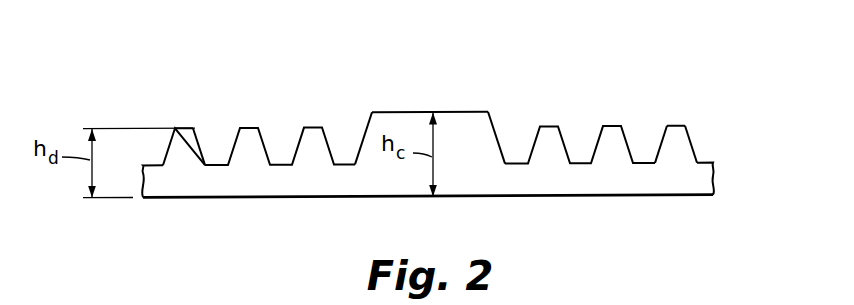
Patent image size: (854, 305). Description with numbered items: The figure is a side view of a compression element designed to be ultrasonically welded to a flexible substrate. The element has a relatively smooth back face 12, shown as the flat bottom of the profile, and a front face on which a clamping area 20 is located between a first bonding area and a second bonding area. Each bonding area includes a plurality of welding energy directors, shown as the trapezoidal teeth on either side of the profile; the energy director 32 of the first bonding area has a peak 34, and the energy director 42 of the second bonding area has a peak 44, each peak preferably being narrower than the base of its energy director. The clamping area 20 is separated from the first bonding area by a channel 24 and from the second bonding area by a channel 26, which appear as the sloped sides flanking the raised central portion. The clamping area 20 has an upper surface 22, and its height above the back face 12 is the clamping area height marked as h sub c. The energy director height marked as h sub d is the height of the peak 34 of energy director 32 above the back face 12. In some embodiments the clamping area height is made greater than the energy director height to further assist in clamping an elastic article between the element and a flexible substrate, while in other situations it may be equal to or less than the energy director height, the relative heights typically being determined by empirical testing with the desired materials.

The back face 12 is at (280, 196).
The clamping area 20 is at (428, 145).
The upper surface 22 is at (461, 112).
The channel 24 is at (343, 122).
The channel 26 is at (531, 109).
The welding energy director 32 is at (160, 107).
The peak 34 is at (186, 125).
The welding energy director 42 is at (698, 103).
The peak 44 is at (680, 123).